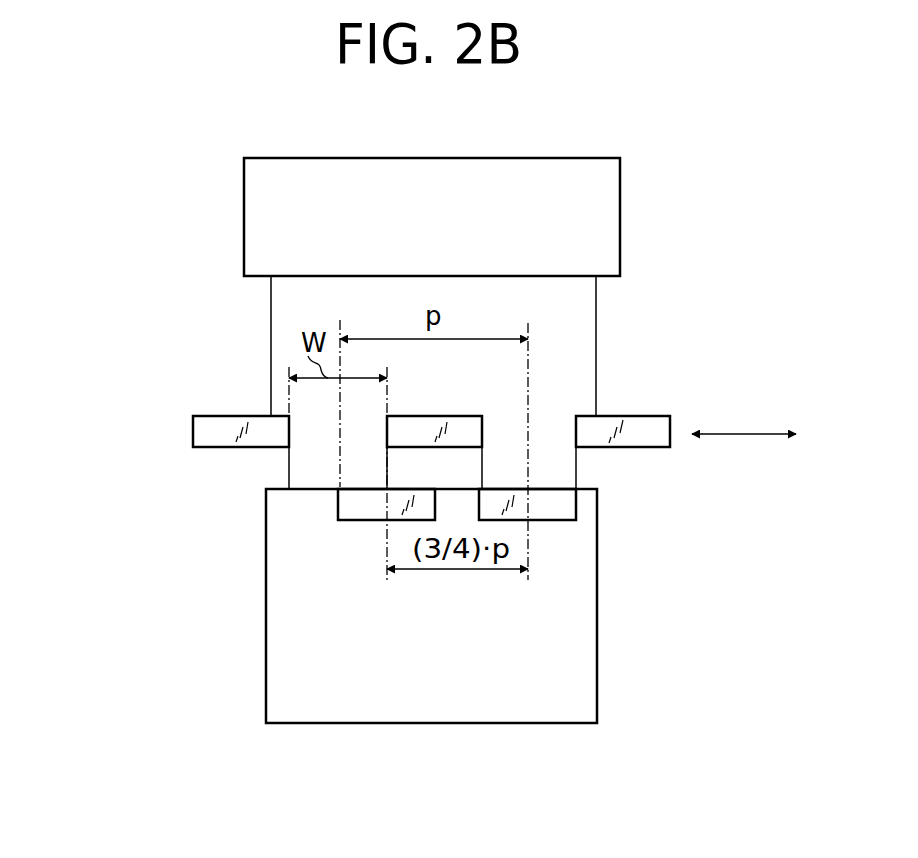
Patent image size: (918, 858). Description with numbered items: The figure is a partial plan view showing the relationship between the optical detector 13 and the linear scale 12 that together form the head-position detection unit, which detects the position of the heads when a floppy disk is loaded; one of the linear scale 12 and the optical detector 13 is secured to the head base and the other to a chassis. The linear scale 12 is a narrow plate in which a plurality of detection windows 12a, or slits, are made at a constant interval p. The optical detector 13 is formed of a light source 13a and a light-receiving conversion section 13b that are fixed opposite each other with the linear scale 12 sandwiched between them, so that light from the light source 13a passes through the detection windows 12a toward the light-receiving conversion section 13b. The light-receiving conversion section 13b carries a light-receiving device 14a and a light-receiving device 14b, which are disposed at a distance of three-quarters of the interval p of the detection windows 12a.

The linear scale 12 is at (648, 428).
The detection window 12a is at (576, 430).
The optical detector 13 is at (110, 310).
The light source 13a is at (270, 245).
The light-receiving conversion section 13b is at (285, 533).
The light-receiving device 14a is at (367, 508).
The light-receiving device 14b is at (550, 513).